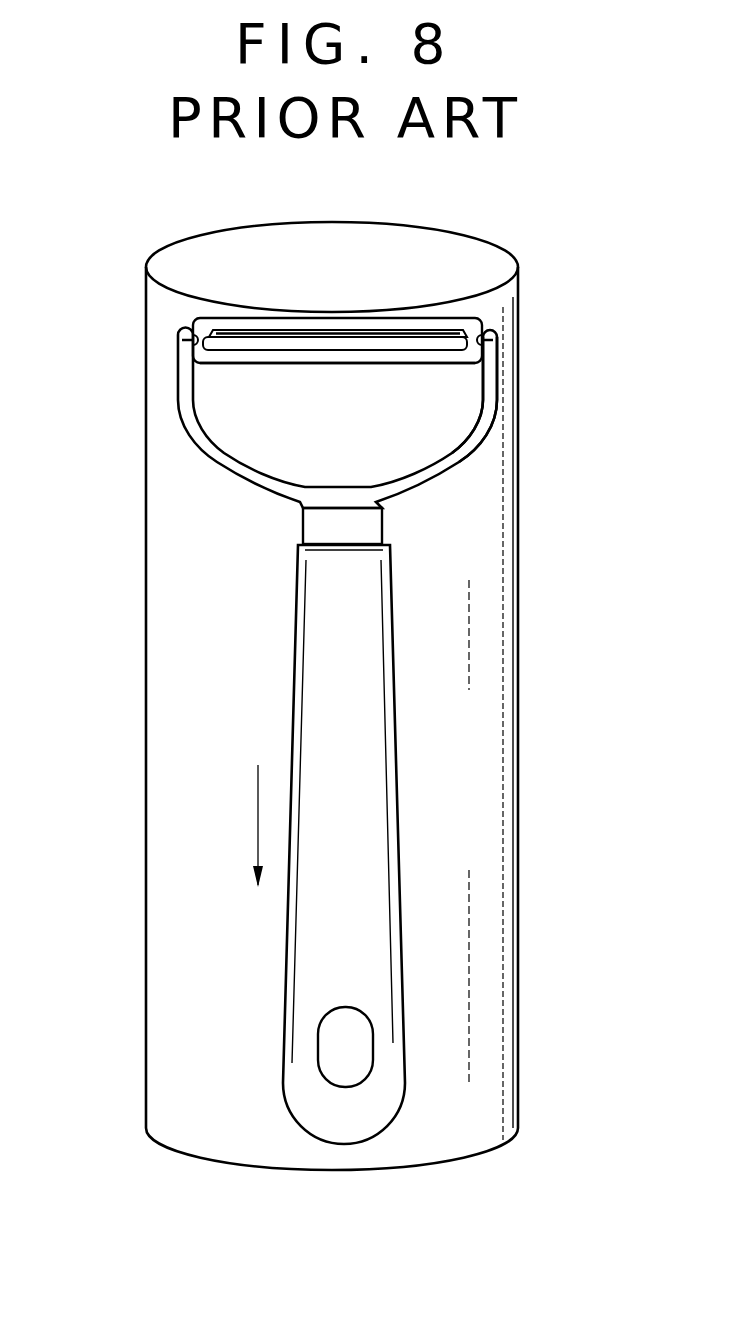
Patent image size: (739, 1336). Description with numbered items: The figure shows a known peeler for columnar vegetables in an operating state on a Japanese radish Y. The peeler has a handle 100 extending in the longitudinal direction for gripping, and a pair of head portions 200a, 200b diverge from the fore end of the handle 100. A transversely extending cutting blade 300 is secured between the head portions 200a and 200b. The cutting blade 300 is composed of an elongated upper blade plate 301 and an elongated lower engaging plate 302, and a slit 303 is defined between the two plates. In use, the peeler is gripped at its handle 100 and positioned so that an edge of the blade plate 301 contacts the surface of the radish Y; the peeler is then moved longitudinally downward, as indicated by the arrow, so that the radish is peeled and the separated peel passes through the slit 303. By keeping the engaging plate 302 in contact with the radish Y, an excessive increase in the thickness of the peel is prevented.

The handle 100 is at (380, 828).
The head portion 200a is at (178, 390).
The head portion 200b is at (497, 378).
The cutting blade 300 is at (322, 314).
The upper blade plate 301 is at (415, 323).
The lower engaging plate 302 is at (314, 358).
The slit 303 is at (400, 342).
The Japanese radish Y is at (522, 596).